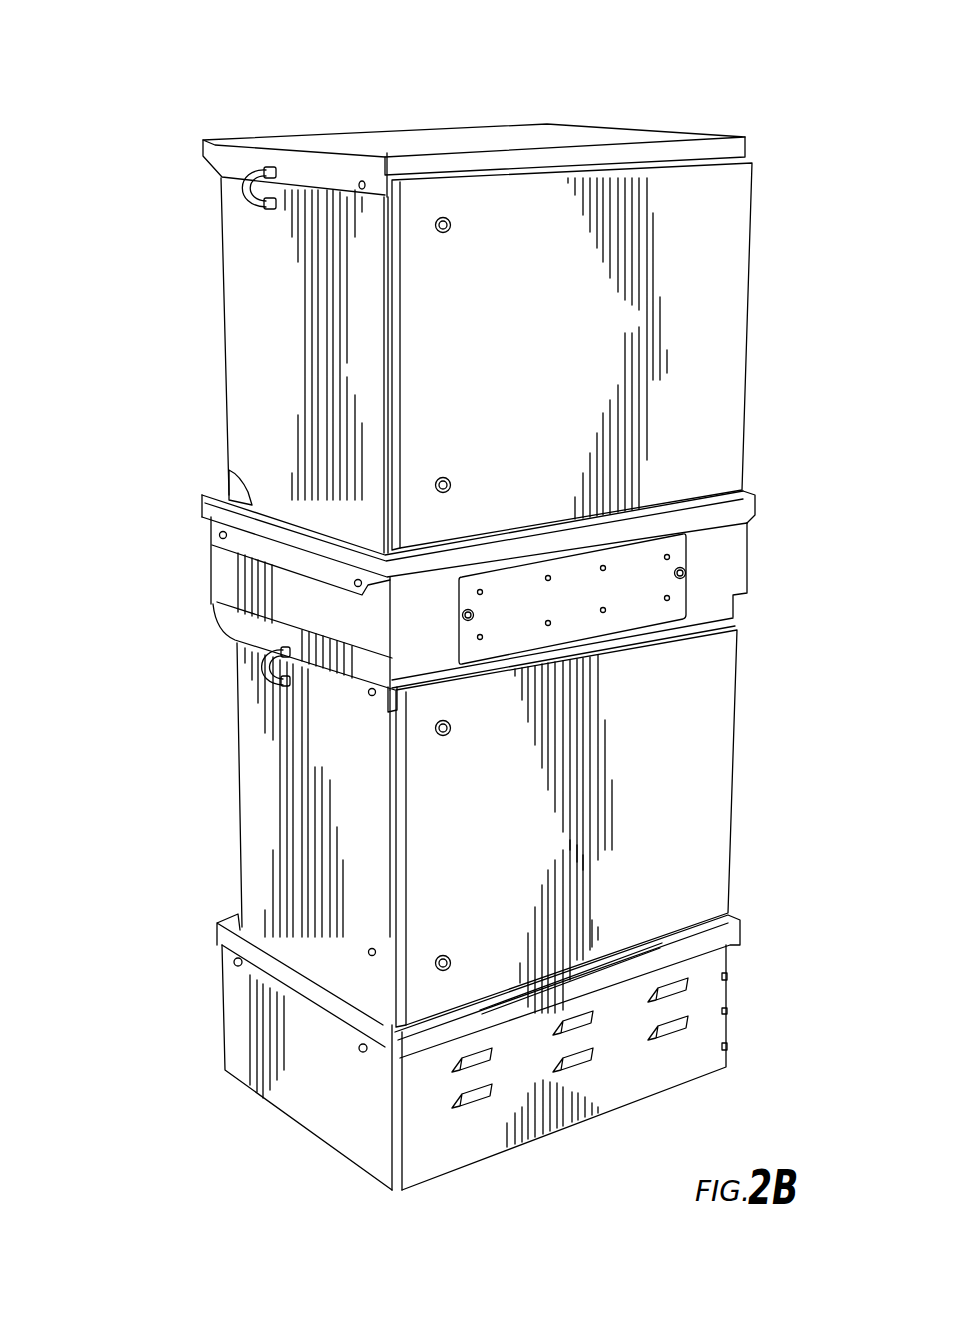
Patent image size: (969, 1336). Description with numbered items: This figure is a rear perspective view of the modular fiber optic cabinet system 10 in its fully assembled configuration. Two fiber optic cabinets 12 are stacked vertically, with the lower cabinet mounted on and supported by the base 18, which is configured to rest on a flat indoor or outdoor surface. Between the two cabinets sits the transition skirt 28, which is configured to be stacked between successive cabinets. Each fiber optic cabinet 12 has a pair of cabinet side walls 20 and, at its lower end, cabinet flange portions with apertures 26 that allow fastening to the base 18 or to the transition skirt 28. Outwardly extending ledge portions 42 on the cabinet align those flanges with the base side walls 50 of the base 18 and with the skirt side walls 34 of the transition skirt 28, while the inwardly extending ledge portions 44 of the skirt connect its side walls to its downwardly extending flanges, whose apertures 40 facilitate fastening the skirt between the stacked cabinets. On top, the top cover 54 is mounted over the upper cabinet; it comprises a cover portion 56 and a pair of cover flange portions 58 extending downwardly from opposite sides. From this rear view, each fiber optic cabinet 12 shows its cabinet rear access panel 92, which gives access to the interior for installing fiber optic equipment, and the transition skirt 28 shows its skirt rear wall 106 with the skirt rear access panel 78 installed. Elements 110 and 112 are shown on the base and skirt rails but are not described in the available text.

The modular fiber optic cabinet system 10 is at (752, 80).
The fiber optic cabinet 12 is at (438, 595).
The base 18 is at (457, 1067).
The cabinet side wall 20 is at (255, 245).
The apertures 26 is at (238, 515).
The transition skirt 28 is at (449, 761).
The skirt side wall 34 is at (222, 582).
The apertures 40 is at (238, 634).
The outwardly extending ledge portion 42 is at (250, 505).
The inwardly extending ledge portion 44 is at (237, 622).
The base side wall 50 is at (240, 1010).
The top cover 54 is at (394, 138).
The cover portion 56 is at (395, 140).
The cover flange portion 58 is at (225, 168).
The skirt rear access panel 78 is at (680, 595).
The cabinet rear access panel 92 is at (720, 365).
The skirt rear wall 106 is at (720, 565).
The base front wall 110 is at (700, 1015).
The front rail 112 is at (737, 505).